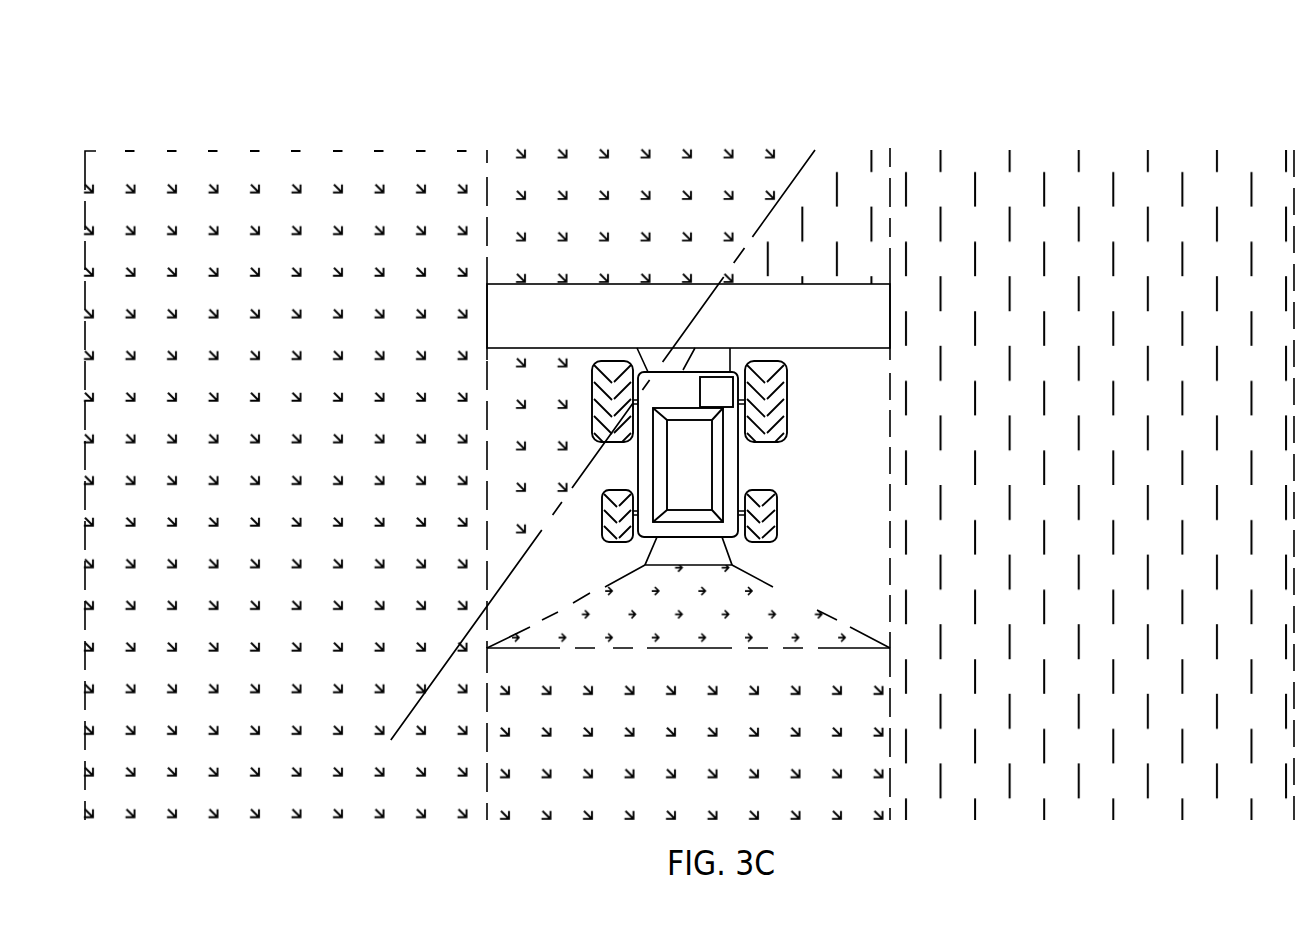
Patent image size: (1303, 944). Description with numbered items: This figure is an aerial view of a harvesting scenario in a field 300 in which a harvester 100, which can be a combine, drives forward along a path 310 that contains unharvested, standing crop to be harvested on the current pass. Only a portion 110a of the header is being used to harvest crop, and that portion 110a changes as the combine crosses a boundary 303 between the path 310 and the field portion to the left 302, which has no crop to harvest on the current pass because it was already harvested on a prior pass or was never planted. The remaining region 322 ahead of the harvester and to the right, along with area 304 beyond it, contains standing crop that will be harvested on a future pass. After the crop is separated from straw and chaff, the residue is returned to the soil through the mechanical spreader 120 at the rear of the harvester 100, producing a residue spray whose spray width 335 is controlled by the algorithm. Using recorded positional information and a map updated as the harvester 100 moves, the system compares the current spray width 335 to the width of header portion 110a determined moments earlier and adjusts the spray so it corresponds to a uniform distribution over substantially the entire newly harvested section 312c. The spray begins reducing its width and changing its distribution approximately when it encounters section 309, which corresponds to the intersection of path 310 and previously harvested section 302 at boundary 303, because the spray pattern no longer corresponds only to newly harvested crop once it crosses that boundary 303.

The field 300 is at (943, 120).
The path 310 is at (666, 160).
The field portion to the left 302 is at (638, 214).
The second field zone 322 is at (825, 217).
The header portion 110a is at (688, 316).
The section 309 is at (534, 447).
The harvester 100 is at (733, 458).
The mechanical spreader 120 is at (710, 553).
The spray width 335 is at (762, 608).
The area 304 is at (1097, 485).
The section 312c is at (684, 741).
The boundary 303 is at (589, 458).